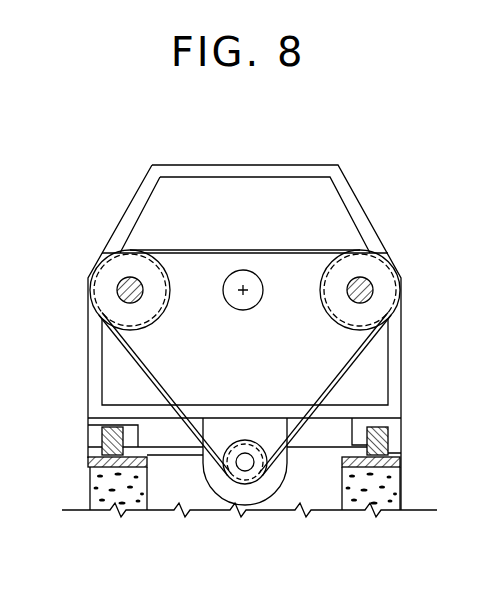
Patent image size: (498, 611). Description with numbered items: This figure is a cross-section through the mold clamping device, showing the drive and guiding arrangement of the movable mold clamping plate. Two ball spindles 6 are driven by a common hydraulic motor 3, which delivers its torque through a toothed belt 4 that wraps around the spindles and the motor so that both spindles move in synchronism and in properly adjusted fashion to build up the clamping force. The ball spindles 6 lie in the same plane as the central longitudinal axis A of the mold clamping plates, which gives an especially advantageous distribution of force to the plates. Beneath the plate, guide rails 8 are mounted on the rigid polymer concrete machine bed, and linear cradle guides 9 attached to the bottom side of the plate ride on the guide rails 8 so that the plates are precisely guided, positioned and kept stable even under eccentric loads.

The hydraulic motor 3 is at (226, 488).
The toothed belt 4 is at (140, 358).
The ball spindles 6 is at (120, 282).
The guide rails 8 is at (107, 483).
The linear cradle guides 9 is at (392, 441).
The central longitudinal axis A is at (241, 287).